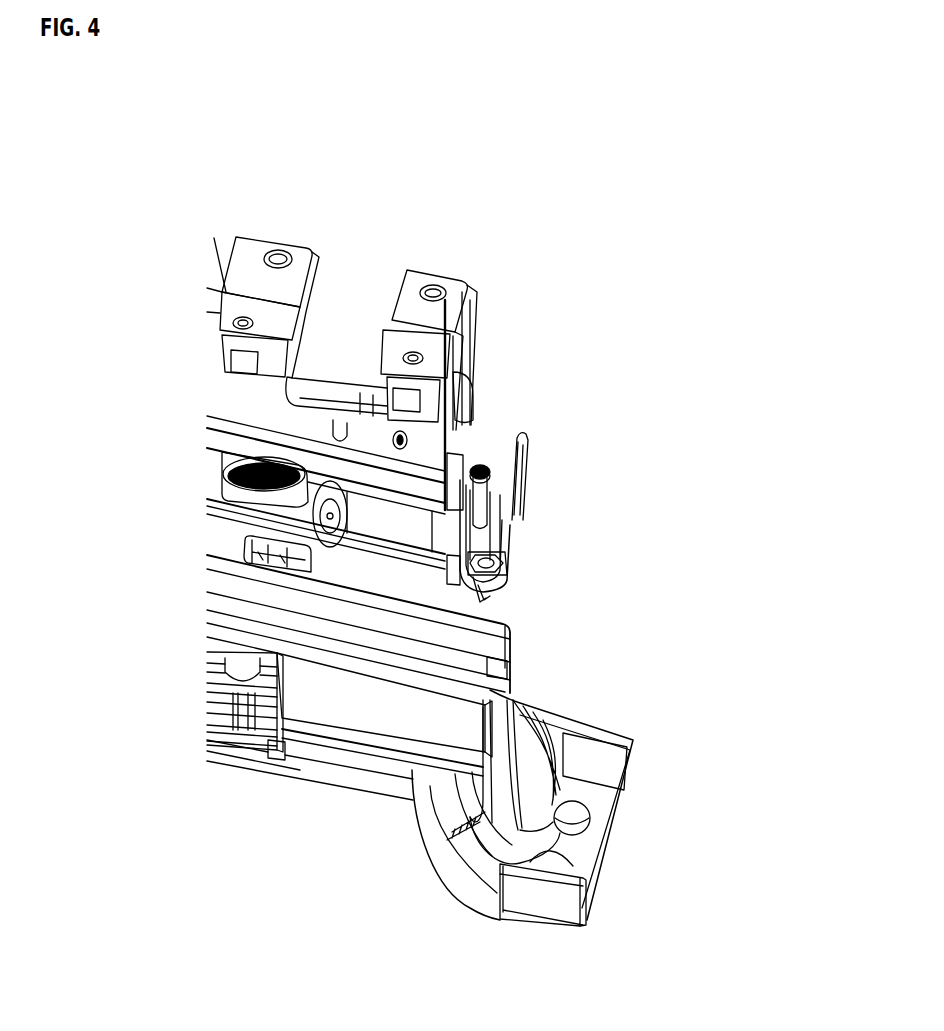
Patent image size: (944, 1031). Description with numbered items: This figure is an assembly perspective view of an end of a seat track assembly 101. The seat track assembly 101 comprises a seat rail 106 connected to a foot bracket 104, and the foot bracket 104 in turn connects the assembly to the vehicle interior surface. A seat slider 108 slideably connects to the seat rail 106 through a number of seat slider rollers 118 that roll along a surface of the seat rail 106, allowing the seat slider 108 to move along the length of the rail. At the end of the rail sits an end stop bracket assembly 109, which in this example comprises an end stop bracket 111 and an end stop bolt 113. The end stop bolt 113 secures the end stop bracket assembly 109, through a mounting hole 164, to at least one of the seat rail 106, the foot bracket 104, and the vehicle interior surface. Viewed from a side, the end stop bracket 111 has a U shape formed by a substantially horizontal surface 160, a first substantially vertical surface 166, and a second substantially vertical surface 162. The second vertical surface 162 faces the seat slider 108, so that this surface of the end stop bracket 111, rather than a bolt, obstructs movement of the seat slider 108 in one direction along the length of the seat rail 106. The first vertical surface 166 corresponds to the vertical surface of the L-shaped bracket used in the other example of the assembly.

The seat track assembly 101 is at (766, 148).
The foot bracket 104 is at (471, 912).
The seat rail 106 is at (513, 657).
The seat slider 108 is at (318, 378).
The end stop bracket assembly 109 is at (558, 423).
The end stop bracket 111 is at (520, 526).
The end stop bolt 113 is at (477, 467).
The seat slider rollers 118 is at (328, 543).
The substantially horizontal surface 160 is at (480, 590).
The second substantially vertical surface 162 is at (445, 562).
The mounting hole 164 is at (518, 550).
The first substantially vertical surface 166 is at (518, 513).